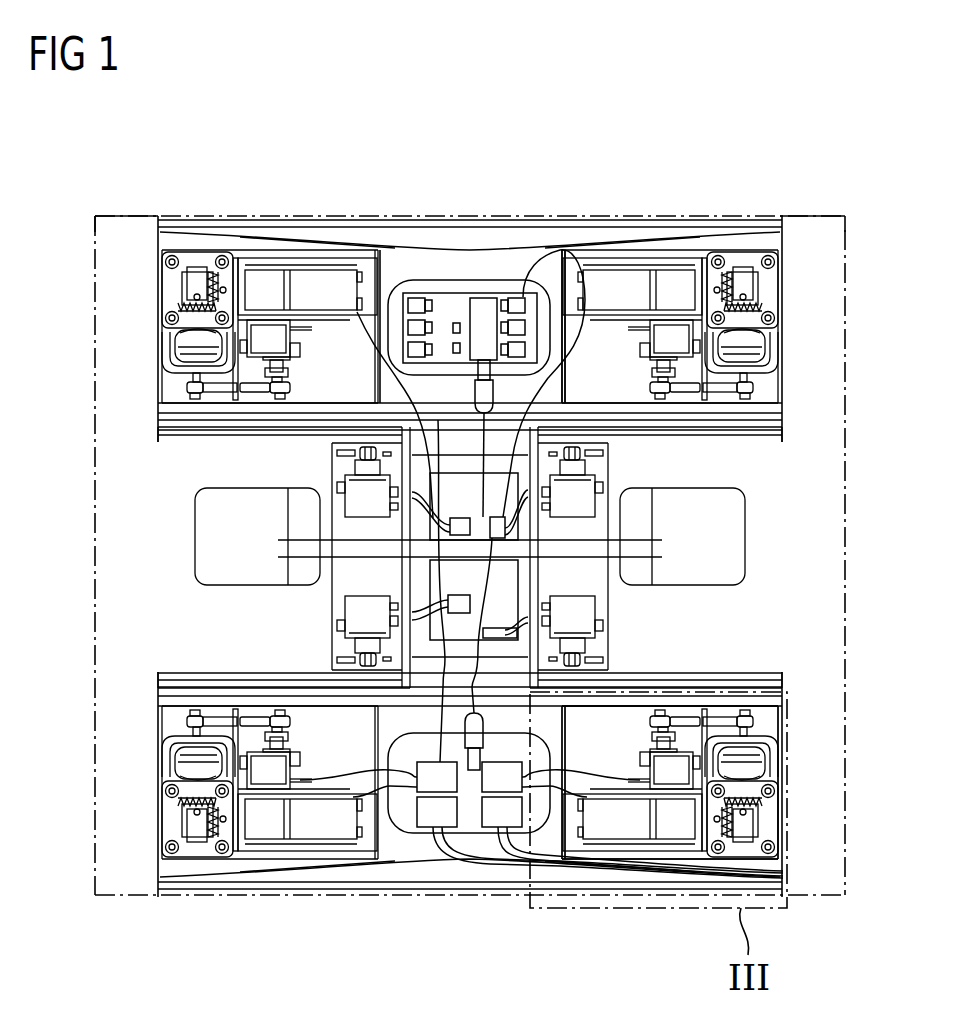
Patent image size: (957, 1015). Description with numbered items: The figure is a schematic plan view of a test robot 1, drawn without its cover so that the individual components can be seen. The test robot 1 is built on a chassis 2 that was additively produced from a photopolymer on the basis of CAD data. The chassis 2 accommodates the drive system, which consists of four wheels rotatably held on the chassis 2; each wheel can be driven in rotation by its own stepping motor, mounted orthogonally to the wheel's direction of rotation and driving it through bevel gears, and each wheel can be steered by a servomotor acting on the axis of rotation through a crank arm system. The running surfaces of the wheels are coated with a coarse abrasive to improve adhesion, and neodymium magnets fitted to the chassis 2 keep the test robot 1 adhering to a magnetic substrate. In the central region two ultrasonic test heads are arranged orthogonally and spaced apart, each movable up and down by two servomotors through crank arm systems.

The test robot 1 is at (733, 141).
The chassis 2 is at (808, 690).